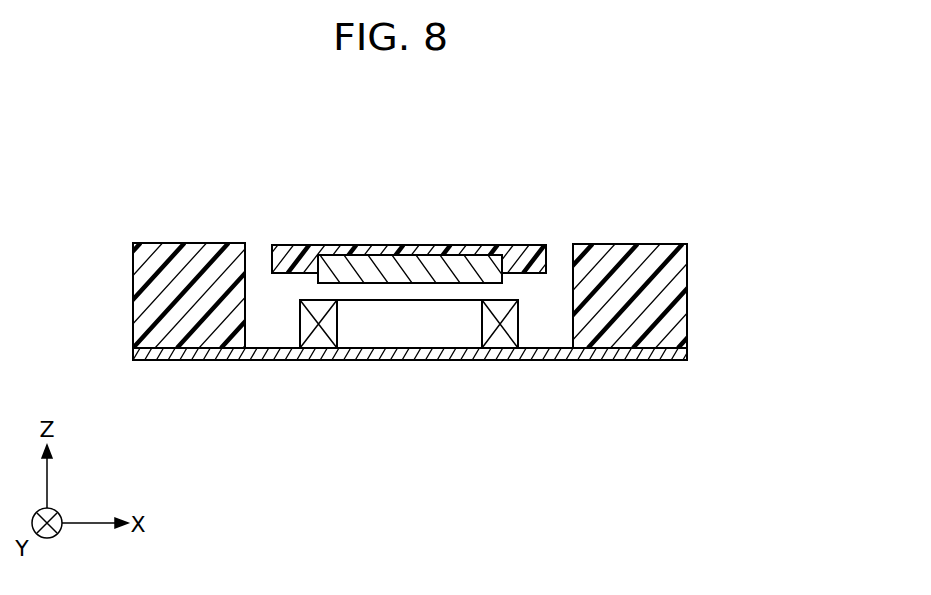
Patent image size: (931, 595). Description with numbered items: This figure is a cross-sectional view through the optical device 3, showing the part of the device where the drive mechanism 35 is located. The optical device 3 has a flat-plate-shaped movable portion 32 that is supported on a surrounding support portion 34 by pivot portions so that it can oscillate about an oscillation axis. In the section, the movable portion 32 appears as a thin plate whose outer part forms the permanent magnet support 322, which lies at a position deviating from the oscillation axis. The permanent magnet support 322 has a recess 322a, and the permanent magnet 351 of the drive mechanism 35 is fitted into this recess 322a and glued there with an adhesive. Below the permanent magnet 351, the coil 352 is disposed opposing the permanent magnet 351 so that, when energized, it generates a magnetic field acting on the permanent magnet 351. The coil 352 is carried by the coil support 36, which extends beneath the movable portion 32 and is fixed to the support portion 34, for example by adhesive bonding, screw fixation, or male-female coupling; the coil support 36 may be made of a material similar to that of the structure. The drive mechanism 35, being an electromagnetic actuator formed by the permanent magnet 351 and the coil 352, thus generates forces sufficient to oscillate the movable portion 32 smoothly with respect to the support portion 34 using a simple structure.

The optical device 3 is at (178, 228).
The movable portion 32 is at (527, 258).
The permanent magnet support 322 is at (428, 247).
The recess 322a is at (508, 254).
The support portion 34 is at (668, 293).
The drive mechanism 35 is at (300, 203).
The permanent magnet 351 is at (365, 267).
The coil 352 is at (410, 328).
The coil support 36 is at (600, 353).